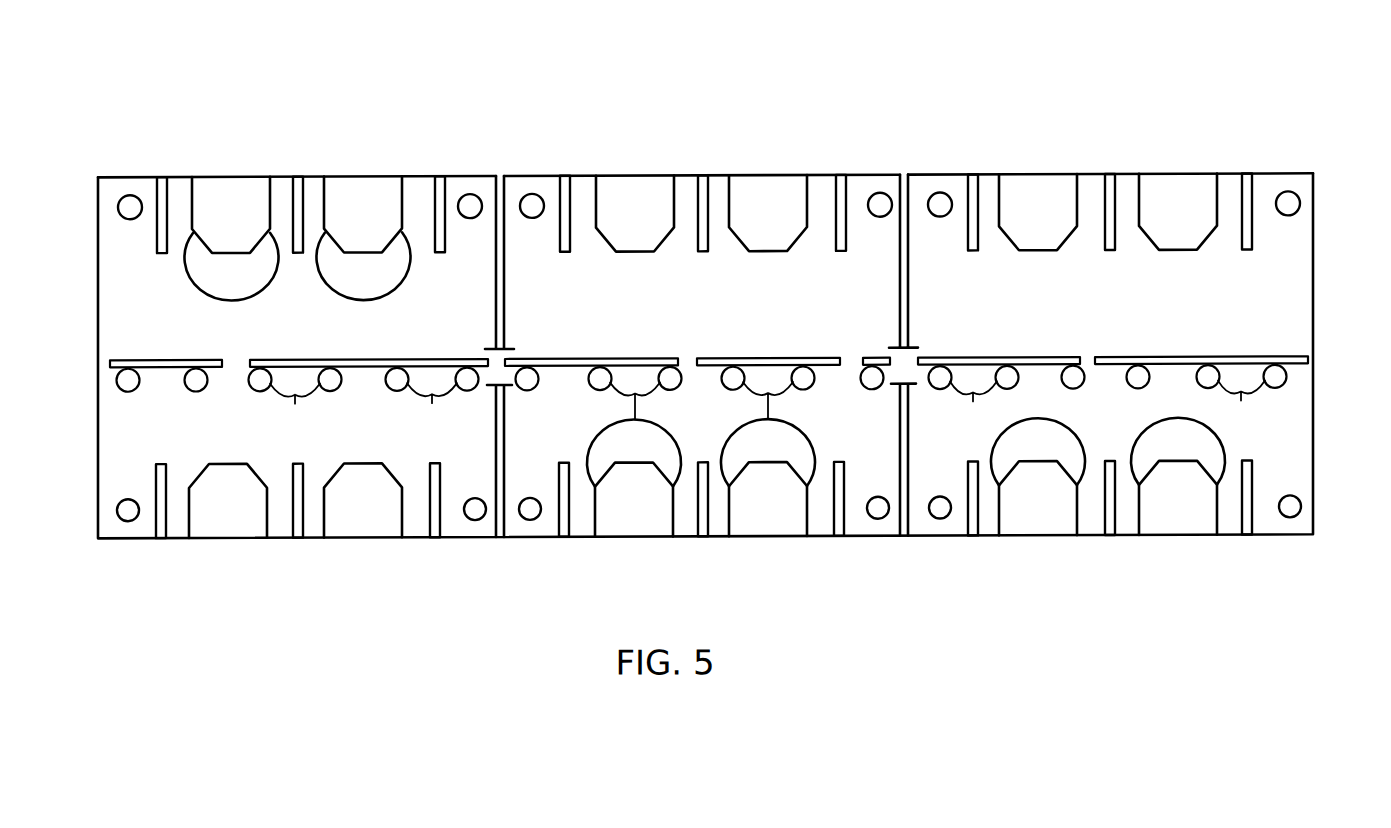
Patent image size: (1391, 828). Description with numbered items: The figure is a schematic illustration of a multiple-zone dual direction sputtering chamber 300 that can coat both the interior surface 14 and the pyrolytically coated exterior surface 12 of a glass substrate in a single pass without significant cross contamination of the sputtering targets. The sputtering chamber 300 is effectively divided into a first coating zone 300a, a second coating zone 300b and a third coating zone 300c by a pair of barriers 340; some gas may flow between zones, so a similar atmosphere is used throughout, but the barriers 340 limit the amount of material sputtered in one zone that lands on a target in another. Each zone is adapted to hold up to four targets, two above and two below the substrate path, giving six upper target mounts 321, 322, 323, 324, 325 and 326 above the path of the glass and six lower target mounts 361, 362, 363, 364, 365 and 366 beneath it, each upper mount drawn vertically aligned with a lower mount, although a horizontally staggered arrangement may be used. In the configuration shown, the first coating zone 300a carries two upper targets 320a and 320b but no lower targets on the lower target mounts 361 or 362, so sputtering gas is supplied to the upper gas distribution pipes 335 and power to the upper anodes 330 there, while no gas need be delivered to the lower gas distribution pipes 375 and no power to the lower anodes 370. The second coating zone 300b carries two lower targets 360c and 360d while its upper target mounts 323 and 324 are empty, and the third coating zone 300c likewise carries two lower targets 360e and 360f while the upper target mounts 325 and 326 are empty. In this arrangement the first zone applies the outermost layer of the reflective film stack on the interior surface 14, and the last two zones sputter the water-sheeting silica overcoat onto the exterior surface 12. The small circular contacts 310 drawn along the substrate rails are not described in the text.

The sputtering chamber 300 is at (1315, 154).
The first coating zone 300a is at (98, 187).
The second coating zone 300b is at (578, 176).
The third coating zone 300c is at (1313, 178).
The pyrolytically coated exterior surface 12 is at (170, 366).
The interior surface 14 is at (165, 359).
The contact 310 is at (137, 393).
The upper target 320a is at (212, 282).
The upper target 320b is at (345, 282).
The upper target mount 321 is at (224, 205).
The upper target mount 322 is at (364, 213).
The upper target mount 323 is at (623, 205).
The upper target mount 324 is at (759, 205).
The upper target mount 325 is at (1040, 193).
The upper target mount 326 is at (1178, 193).
The upper anode 330 is at (157, 176).
The upper gas distribution pipe 335 is at (130, 219).
The barrier 340 is at (497, 176).
The lower target 360c is at (615, 457).
The lower target 360d is at (749, 457).
The lower target 360e is at (1019, 457).
The lower target 360f is at (1159, 457).
The lower target mount 361 is at (230, 523).
The lower target mount 362 is at (363, 523).
The lower target mount 363 is at (633, 512).
The lower target mount 364 is at (765, 507).
The lower target mount 365 is at (1035, 515).
The lower target mount 366 is at (1178, 515).
The lower anode 370 is at (168, 523).
The lower gas distribution pipe 375 is at (136, 525).